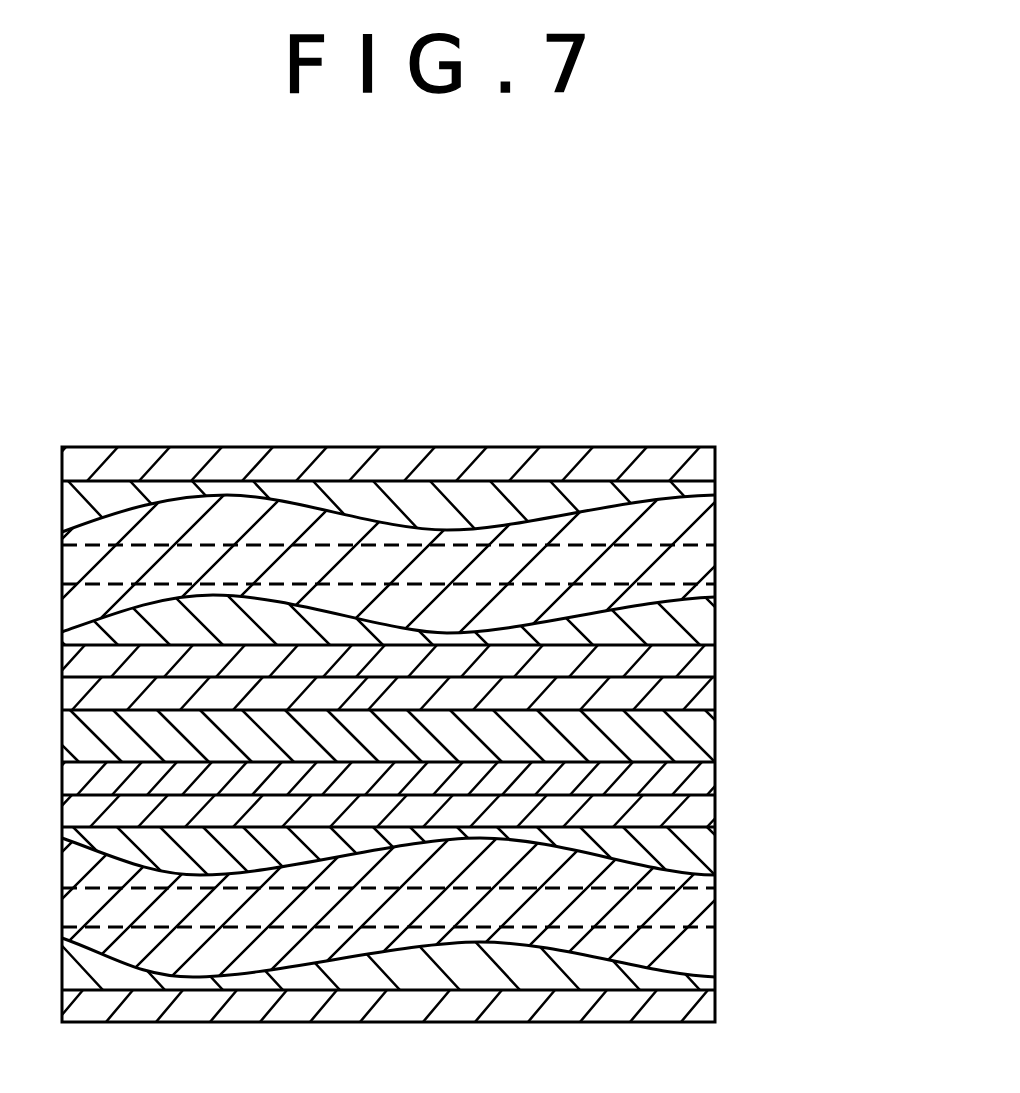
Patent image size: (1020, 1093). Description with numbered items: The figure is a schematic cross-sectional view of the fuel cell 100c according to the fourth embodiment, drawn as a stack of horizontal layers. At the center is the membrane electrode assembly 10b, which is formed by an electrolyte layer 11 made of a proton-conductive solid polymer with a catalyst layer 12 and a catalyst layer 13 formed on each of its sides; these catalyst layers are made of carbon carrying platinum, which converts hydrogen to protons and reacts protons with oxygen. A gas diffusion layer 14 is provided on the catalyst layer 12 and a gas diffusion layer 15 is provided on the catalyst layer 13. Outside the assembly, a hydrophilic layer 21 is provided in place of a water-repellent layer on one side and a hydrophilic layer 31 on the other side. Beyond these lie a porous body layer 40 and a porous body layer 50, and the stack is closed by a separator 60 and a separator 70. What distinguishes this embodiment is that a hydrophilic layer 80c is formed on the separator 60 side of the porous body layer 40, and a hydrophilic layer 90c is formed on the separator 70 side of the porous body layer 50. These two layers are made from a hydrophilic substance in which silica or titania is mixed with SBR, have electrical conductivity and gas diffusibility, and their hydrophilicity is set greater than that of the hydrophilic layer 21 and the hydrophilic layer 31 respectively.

The fuel cell 100c is at (630, 428).
The separator 60 is at (705, 467).
The hydrophilic layer 80c is at (718, 485).
The porous body layer 40 is at (705, 567).
The hydrophilic layer 21 is at (718, 587).
The membrane electrode assembly 10b is at (822, 625).
The gas diffusion layer 14 is at (704, 665).
The catalyst layer 12 is at (704, 697).
The electrolyte layer 11 is at (704, 738).
The catalyst layer 13 is at (704, 780).
The gas diffusion layer 15 is at (704, 813).
The hydrophilic layer 31 is at (716, 830).
The porous body layer 50 is at (704, 905).
The hydrophilic layer 90c is at (716, 925).
The separator 70 is at (704, 1010).